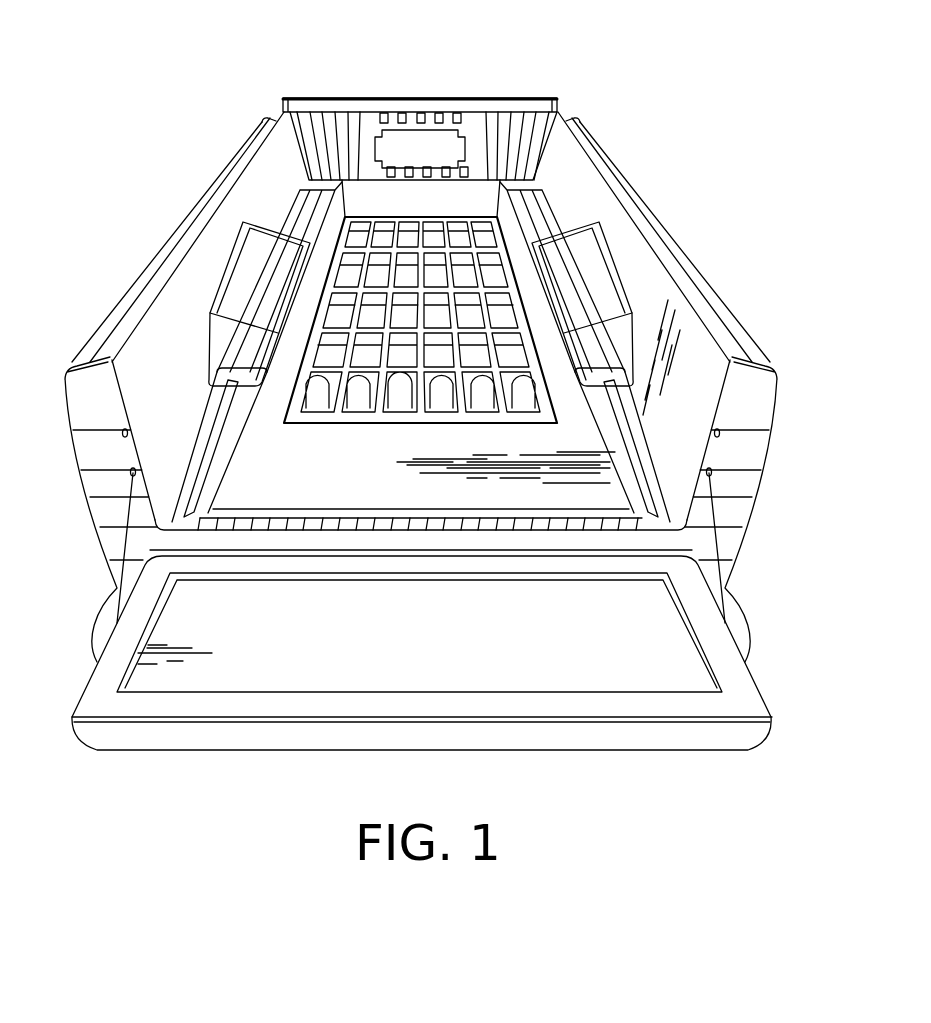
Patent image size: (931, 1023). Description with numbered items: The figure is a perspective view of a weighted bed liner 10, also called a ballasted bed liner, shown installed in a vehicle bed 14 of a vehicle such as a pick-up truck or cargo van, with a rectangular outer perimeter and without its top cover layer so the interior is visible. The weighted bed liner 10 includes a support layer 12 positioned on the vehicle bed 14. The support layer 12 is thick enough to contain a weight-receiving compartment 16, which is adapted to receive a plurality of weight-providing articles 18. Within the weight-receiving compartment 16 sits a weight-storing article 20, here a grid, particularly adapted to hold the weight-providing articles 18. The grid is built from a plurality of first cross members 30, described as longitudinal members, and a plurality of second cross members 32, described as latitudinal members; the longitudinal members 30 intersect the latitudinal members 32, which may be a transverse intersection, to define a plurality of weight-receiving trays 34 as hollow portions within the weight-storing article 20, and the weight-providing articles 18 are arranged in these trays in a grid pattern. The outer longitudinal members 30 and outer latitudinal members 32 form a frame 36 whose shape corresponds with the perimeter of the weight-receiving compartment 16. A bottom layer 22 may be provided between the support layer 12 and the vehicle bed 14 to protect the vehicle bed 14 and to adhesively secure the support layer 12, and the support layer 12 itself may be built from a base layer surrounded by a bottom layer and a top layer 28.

The weighted bed liner 10 is at (505, 78).
The support layer 12 is at (360, 215).
The vehicle bed 14 is at (560, 112).
The weight-receiving compartment 16 is at (292, 350).
The weight-providing articles 18 is at (512, 377).
The weight-storing article 20 is at (287, 103).
The bottom layer 22 is at (475, 265).
The top layer 28 is at (563, 397).
The first cross members 30 is at (443, 232).
The second cross members 32 is at (523, 137).
The weight-receiving trays 34 is at (345, 310).
The frame 36 is at (285, 388).